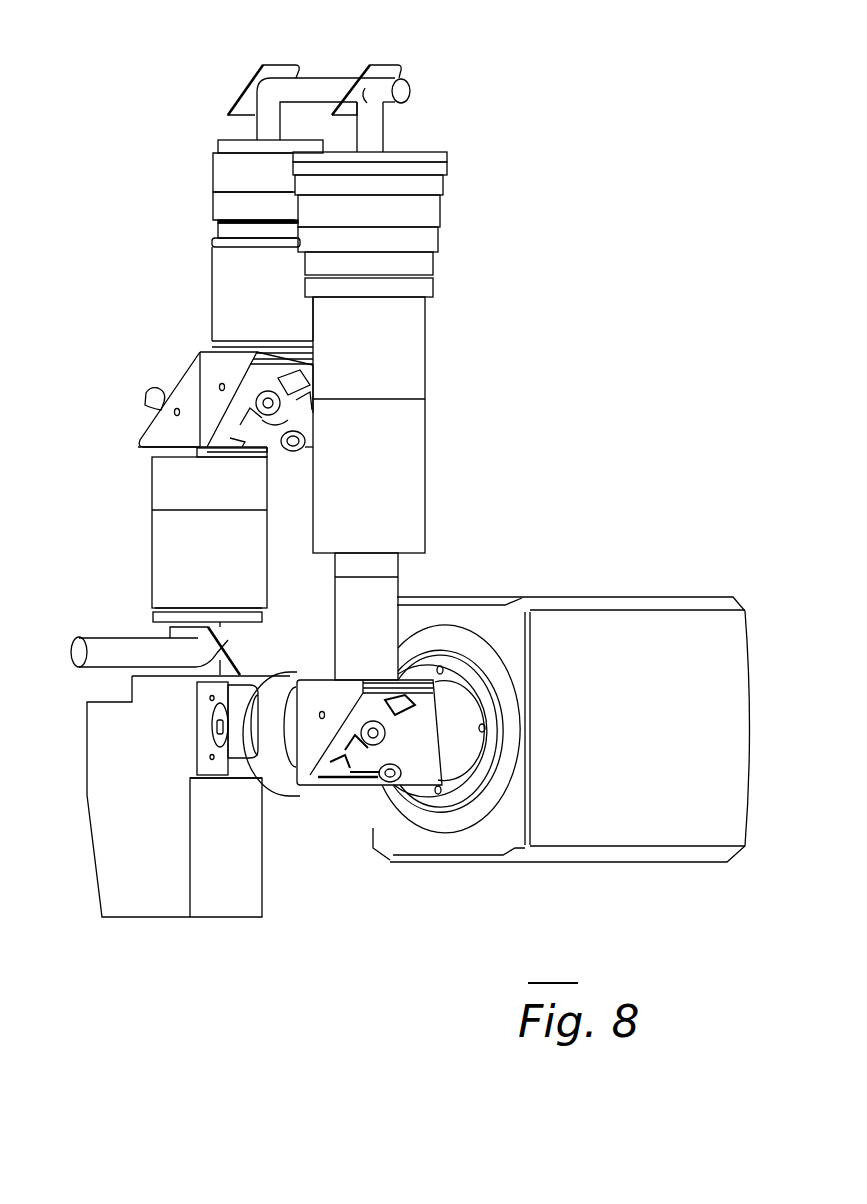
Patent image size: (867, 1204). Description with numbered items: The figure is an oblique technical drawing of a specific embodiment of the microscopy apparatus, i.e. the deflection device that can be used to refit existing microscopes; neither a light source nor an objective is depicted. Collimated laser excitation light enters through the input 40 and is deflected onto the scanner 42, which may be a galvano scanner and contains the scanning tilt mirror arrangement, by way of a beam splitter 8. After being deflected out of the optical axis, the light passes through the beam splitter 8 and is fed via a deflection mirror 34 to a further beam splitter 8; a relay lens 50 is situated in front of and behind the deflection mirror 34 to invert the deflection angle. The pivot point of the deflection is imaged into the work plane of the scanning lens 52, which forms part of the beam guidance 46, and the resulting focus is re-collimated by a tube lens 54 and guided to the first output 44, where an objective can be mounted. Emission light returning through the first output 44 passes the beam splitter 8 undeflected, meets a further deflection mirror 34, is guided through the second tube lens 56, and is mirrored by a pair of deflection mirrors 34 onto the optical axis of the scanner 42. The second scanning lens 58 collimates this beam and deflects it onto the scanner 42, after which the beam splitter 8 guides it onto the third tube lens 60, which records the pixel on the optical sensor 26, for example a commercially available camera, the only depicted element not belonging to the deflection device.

The beam splitter 8 is at (357, 82).
The optical sensor 26 is at (660, 675).
The deflection mirror 34 is at (253, 82).
The input 40 is at (104, 622).
The scanner 42 is at (218, 872).
The first output 44 is at (405, 90).
The beam guidance 46 is at (405, 365).
The relay lens 50 is at (378, 567).
The scanning lens 52 is at (408, 303).
The tube lens 54 is at (427, 205).
The second tube lens 56 is at (225, 198).
The second scanning lens 58 is at (172, 483).
The third tube lens 60 is at (427, 760).